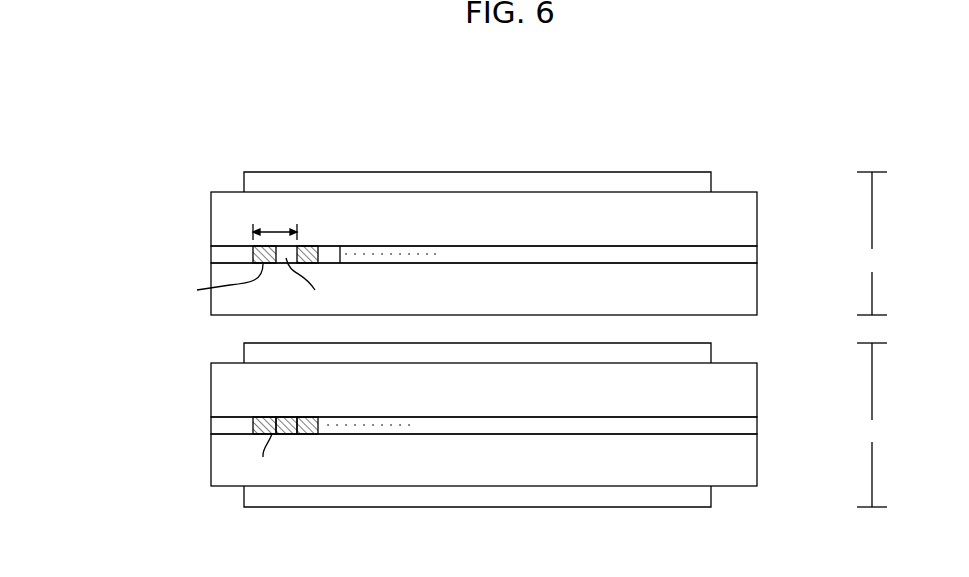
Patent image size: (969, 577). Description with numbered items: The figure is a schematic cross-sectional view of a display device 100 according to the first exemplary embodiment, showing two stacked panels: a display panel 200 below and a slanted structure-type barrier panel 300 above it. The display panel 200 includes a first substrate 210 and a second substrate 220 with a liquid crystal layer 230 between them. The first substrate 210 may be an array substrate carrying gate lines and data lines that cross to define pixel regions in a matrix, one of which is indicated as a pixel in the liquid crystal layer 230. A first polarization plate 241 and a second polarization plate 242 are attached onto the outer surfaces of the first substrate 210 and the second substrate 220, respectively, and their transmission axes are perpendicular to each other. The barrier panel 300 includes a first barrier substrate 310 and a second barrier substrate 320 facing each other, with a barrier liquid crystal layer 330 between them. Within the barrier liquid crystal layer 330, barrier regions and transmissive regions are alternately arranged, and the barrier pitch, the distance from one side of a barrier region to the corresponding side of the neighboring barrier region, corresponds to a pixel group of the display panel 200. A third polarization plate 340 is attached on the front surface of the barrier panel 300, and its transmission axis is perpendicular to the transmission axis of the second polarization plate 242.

The display device 100 is at (503, 72).
The barrier panel 300 is at (872, 243).
The third polarization plate 340 is at (705, 183).
The second barrier substrate 320 is at (752, 217).
The barrier liquid crystal layer 330 is at (728, 254).
The first barrier substrate 310 is at (732, 296).
The display panel 200 is at (872, 425).
The second polarization plate 242 is at (705, 352).
The second substrate 220 is at (752, 387).
The liquid crystal layer 230 is at (728, 424).
The first substrate 210 is at (732, 466).
The first polarization plate 241 is at (710, 500).